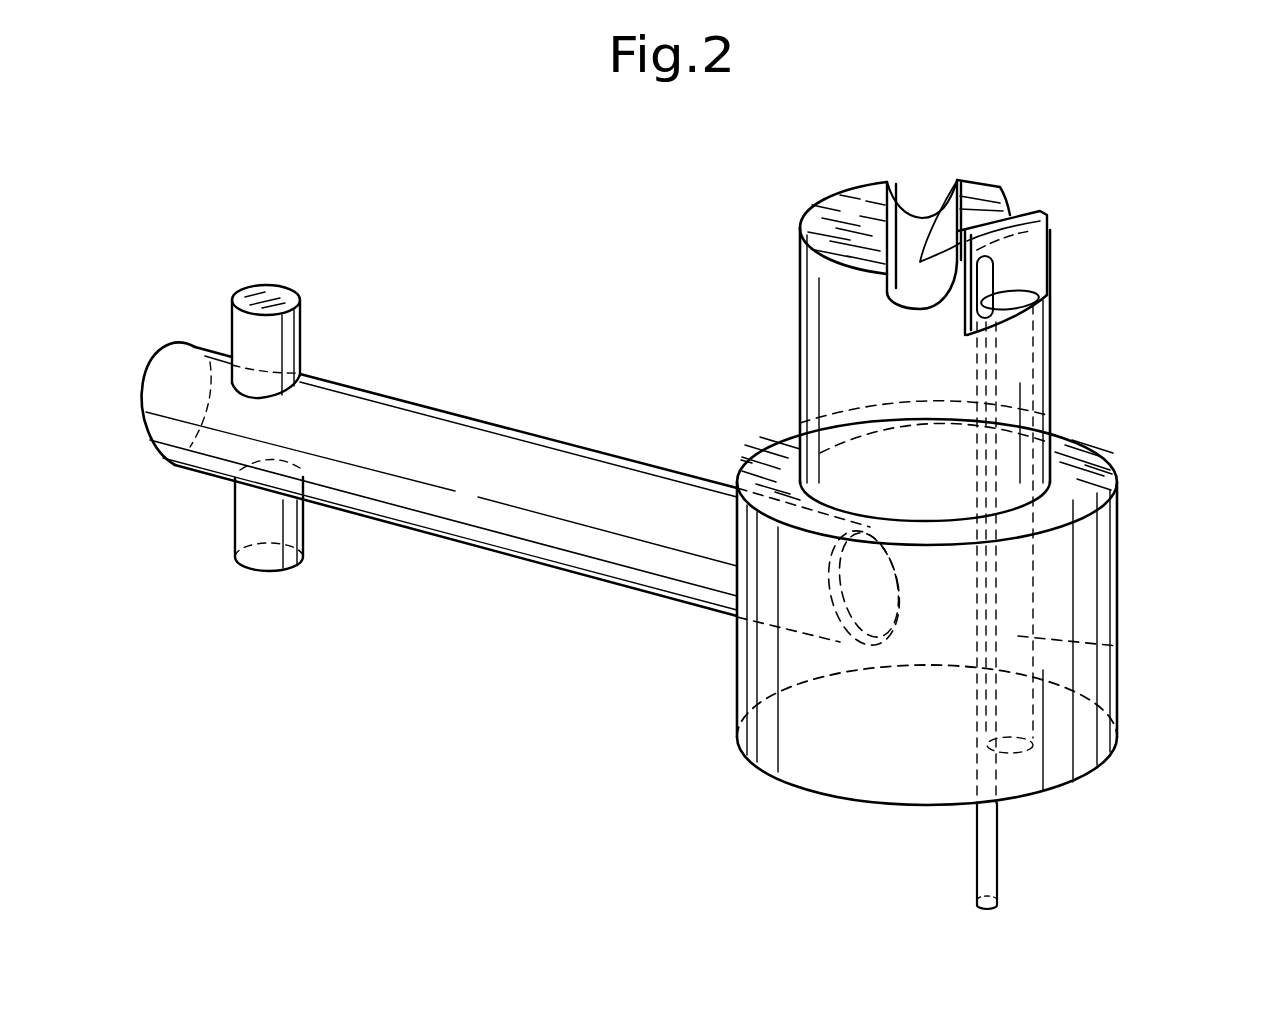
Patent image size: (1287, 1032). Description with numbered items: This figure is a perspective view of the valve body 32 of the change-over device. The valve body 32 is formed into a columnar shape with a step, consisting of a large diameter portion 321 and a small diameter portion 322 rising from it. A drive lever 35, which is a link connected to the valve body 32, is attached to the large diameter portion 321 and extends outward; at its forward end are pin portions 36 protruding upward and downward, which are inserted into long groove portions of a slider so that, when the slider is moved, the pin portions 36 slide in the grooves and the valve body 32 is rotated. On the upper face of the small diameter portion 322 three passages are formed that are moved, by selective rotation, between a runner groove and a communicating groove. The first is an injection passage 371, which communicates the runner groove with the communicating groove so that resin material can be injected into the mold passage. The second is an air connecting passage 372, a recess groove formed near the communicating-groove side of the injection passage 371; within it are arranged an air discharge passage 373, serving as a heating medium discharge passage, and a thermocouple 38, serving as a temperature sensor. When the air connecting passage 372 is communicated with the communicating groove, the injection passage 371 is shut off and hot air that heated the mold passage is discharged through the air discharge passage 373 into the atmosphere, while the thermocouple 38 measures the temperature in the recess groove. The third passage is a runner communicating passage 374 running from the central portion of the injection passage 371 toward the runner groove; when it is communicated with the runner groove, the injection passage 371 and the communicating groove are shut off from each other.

The valve body 32 is at (1136, 296).
The large diameter portion 321 is at (1090, 580).
The small diameter portion 322 is at (1042, 362).
The drive lever 35 is at (350, 407).
The pin portions 36 is at (283, 328).
The thermocouple 38 is at (984, 274).
The injection passage 371 is at (912, 217).
The air connecting passage 372 is at (1028, 286).
The air discharge passage 373 is at (1117, 646).
The runner communicating passage 374 is at (997, 203).